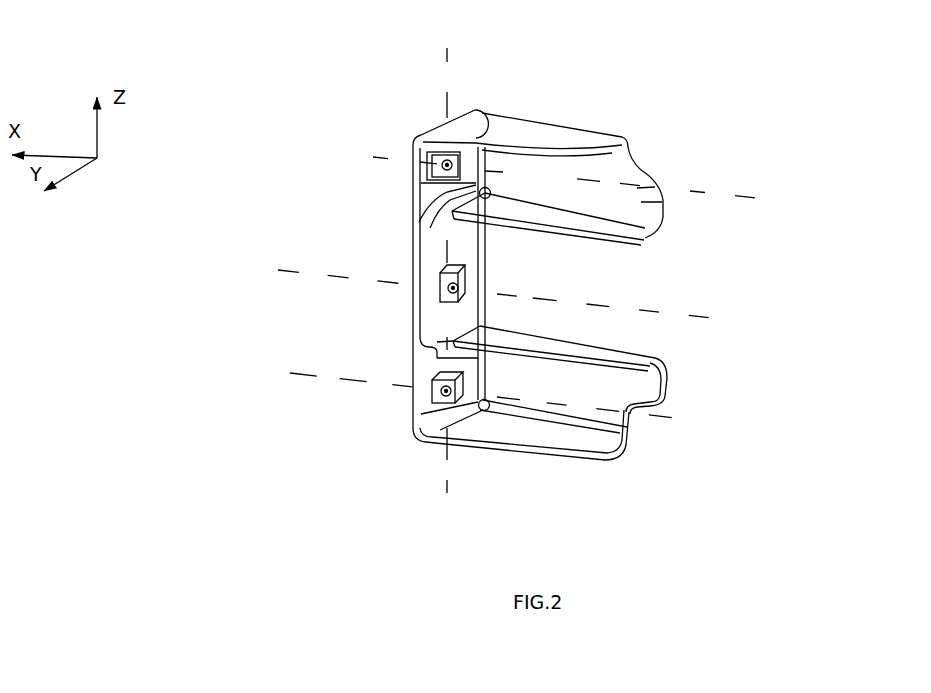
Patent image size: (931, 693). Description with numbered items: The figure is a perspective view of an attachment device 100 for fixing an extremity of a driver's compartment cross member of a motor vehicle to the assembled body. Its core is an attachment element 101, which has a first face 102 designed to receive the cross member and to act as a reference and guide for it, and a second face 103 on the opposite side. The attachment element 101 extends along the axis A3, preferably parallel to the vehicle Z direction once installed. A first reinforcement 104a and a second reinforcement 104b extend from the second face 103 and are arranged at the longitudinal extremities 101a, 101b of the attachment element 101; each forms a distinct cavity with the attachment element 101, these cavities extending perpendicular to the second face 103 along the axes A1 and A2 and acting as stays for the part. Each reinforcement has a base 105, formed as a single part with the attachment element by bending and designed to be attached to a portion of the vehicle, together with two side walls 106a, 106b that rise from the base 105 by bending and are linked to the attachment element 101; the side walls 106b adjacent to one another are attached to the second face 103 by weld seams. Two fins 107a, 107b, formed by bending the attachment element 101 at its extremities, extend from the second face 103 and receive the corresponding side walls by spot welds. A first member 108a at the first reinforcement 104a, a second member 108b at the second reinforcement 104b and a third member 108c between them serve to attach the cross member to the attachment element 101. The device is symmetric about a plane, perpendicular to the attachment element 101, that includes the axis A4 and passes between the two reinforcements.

The attachment device 100 is at (647, 138).
The attachment element 101 is at (410, 290).
The longitudinal extremity 101a is at (423, 127).
The longitudinal extremity 101b is at (420, 442).
The first face 102 is at (413, 253).
The second face 103 is at (447, 242).
The first reinforcement 104a is at (510, 172).
The second reinforcement 104b is at (572, 403).
The base 105 is at (640, 213).
The side wall 106a is at (597, 137).
The side wall 106b is at (637, 233).
The fin 107a is at (470, 108).
The fin 107b is at (457, 447).
The first member 108a is at (422, 183).
The second member 108b is at (438, 390).
The third member 108c is at (455, 295).
The axis A1 is at (584, 177).
The axis A2 is at (728, 418).
The axis A3 is at (462, 265).
The axis A4 is at (472, 288).